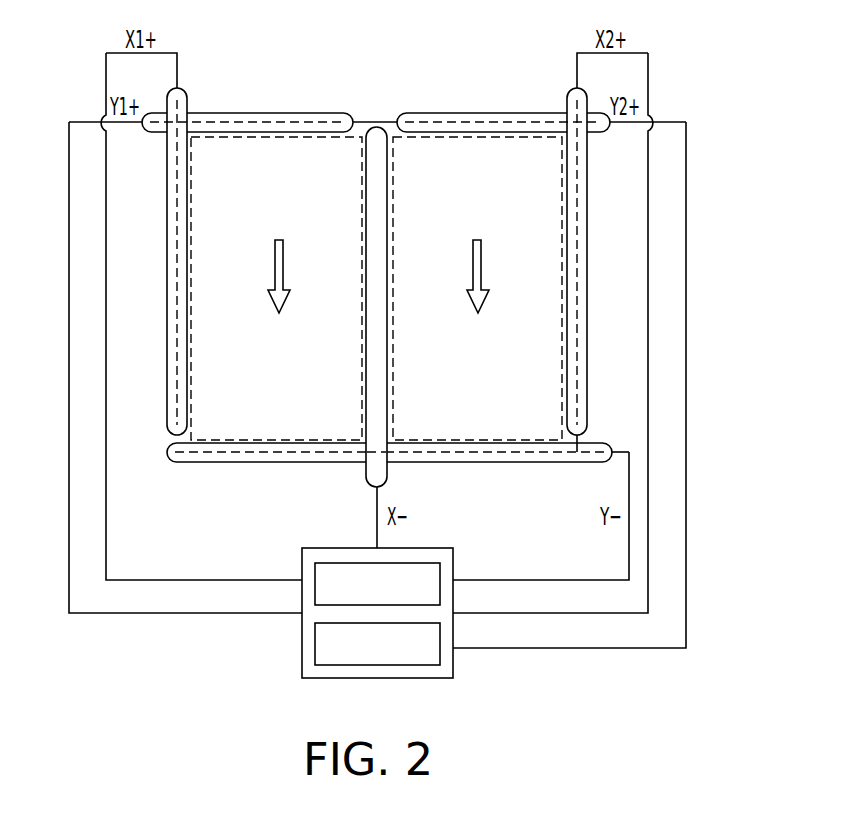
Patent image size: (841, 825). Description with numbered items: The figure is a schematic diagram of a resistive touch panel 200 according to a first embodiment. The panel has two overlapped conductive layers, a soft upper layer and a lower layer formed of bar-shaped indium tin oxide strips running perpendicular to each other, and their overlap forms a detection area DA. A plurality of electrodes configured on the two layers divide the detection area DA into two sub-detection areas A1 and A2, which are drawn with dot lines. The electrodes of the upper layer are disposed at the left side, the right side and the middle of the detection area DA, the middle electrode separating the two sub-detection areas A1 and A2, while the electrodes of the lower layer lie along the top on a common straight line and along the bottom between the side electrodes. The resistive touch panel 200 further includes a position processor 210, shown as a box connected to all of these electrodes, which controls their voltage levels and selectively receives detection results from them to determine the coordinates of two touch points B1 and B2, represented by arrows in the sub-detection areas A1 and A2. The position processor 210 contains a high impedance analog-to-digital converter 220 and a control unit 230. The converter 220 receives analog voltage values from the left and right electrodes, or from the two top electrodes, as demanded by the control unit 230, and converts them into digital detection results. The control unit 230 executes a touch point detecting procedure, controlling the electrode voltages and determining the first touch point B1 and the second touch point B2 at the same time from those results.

The resistive touch panel 200 is at (688, 726).
The position processor 210 is at (453, 672).
The high impedance analog-to-digital converter (ADC) 220 is at (440, 569).
The control unit 230 is at (440, 638).
The detection area DA is at (377, 127).
The sub-detection area A1 is at (275, 137).
The sub-detection area A2 is at (478, 137).
The first touch point B1 is at (290, 275).
The second touch point B2 is at (489, 275).